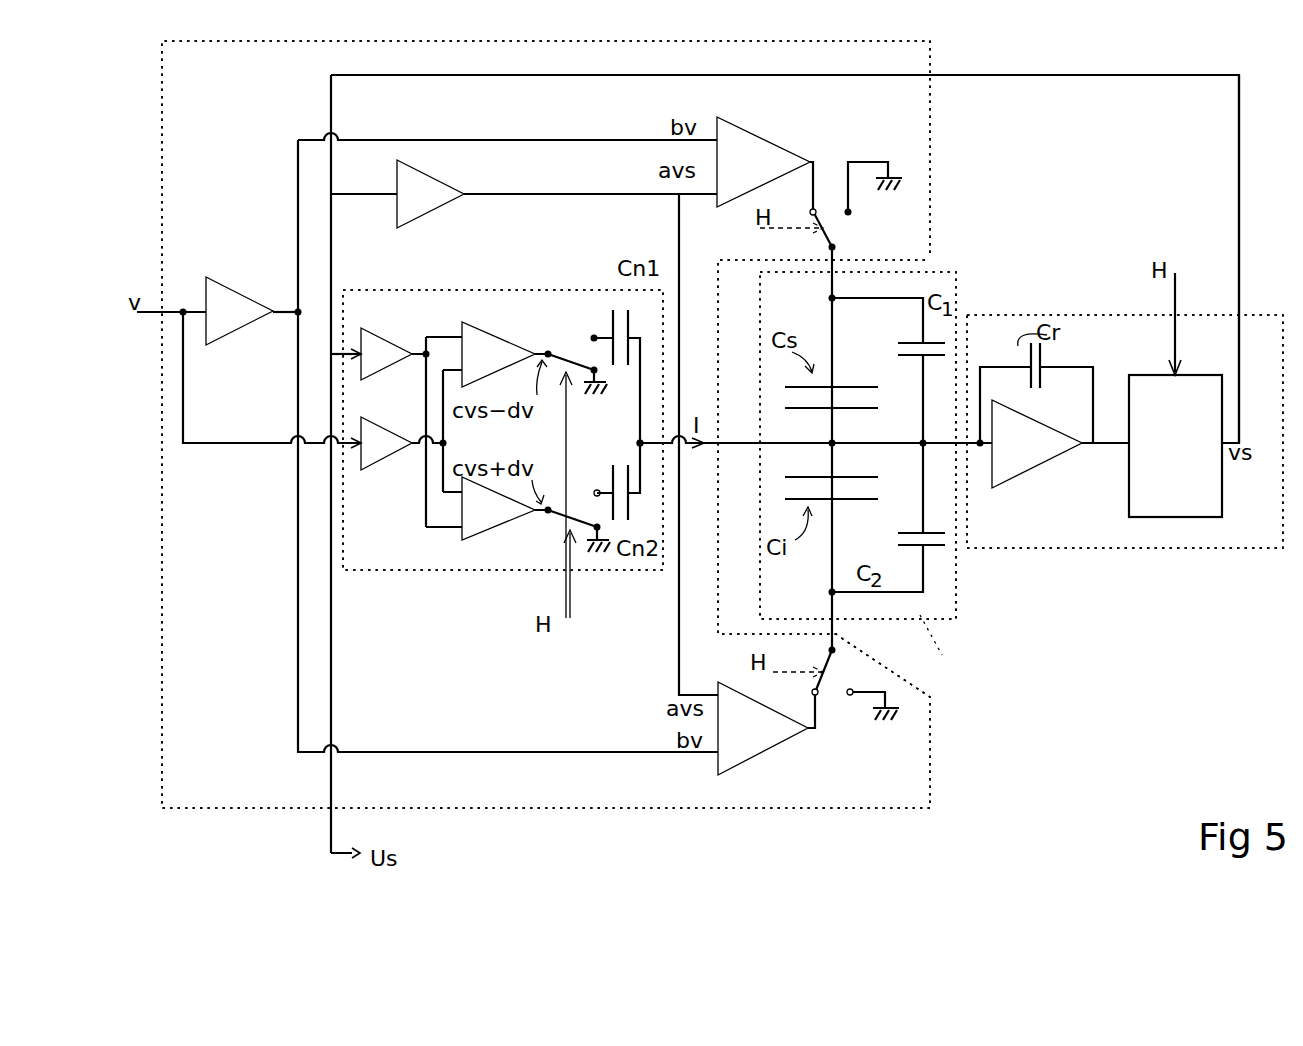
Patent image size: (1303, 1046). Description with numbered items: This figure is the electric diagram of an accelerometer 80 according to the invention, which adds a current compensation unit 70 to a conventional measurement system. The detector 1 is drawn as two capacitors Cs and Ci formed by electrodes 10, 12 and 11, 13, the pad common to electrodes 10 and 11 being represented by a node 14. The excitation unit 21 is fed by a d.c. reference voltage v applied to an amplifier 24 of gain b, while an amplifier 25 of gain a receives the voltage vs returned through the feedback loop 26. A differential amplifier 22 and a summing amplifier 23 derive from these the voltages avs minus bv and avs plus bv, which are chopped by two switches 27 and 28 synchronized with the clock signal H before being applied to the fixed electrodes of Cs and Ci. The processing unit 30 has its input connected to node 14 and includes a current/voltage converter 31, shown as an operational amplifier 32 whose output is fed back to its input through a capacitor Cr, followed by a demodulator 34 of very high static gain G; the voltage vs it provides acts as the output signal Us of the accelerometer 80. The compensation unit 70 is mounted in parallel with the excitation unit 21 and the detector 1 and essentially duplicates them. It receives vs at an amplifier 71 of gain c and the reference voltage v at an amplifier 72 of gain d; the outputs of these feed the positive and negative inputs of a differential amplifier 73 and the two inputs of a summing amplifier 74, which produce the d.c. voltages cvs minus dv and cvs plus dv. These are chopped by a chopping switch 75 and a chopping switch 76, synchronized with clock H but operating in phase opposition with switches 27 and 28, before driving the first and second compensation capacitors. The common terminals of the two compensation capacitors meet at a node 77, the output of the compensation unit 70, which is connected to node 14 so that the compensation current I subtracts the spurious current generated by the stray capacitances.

The detector 1 is at (840, 470).
The electrode 10 is at (850, 409).
The electrode 11 is at (864, 459).
The electrode 12 is at (849, 385).
The electrode 13 is at (848, 503).
The node 14 is at (832, 445).
The excitation unit 21 is at (933, 755).
The differential amplifier 22 is at (752, 128).
The summing amplifier 23 is at (775, 748).
The amplifier 24 is at (218, 277).
The amplifier 25 is at (440, 178).
The feedback loop 26 is at (1000, 78).
The switch 27 is at (836, 236).
The switch 28 is at (833, 664).
The processing unit 30 is at (1135, 550).
The current/voltage converter 31 is at (1031, 498).
The operational amplifier 32 is at (1050, 460).
The demodulator 34 is at (1222, 512).
The current compensation unit 70 is at (467, 570).
The amplifier 71 is at (382, 316).
The amplifier 72 is at (366, 470).
The differential amplifier 73 is at (485, 316).
The summing amplifier 74 is at (464, 540).
The chopping switch 75 is at (562, 370).
The chopping switch 76 is at (589, 529).
The node 77 is at (640, 443).
The accelerometer 80 is at (1110, 695).